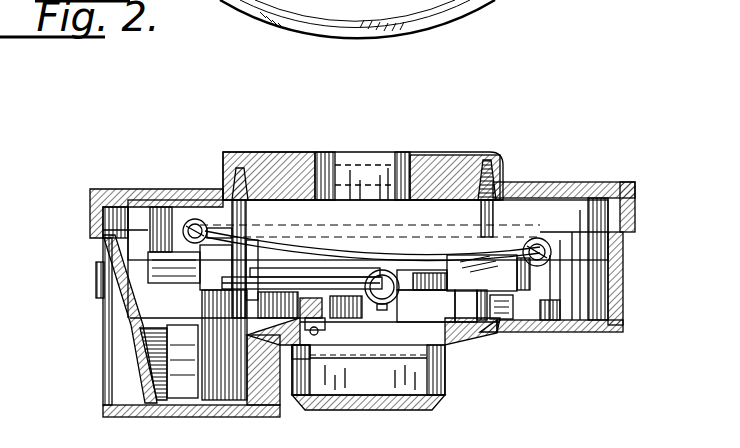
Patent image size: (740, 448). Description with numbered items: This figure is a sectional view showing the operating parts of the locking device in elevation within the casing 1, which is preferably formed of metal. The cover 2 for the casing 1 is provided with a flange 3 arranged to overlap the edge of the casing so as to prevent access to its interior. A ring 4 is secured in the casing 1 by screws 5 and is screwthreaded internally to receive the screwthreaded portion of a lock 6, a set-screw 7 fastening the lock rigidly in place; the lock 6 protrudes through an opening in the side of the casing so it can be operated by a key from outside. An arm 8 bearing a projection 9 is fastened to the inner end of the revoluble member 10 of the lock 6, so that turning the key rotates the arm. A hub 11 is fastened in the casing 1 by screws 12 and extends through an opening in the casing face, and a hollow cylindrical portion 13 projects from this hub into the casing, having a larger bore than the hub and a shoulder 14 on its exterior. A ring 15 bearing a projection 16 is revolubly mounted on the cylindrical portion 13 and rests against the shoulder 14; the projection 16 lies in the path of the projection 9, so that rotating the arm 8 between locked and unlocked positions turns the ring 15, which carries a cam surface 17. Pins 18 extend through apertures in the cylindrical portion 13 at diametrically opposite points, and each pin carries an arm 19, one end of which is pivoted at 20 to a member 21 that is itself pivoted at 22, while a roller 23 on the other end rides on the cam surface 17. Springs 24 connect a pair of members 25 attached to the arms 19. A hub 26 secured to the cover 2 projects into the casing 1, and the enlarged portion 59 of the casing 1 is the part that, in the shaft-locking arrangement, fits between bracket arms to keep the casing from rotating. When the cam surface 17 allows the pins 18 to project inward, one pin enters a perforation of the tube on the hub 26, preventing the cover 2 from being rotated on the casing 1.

The casing 1 is at (585, 331).
The cover 2 is at (557, 183).
The flange 3 is at (636, 218).
The ring 4 is at (182, 361).
The screws 5 is at (192, 286).
The lock 6 is at (132, 283).
The set-screw 7 is at (170, 250).
The arm 8 is at (205, 236).
The projection 9 is at (262, 238).
The revoluble member 10 is at (100, 282).
The hub 11 is at (368, 377).
The screws 12 is at (320, 331).
The hollow cylindrical portion 13 is at (426, 297).
The shoulder 14 is at (495, 232).
The ring 15 is at (368, 230).
The projection 16 is at (258, 276).
The cam surface 17 is at (488, 273).
The pins 18 is at (406, 290).
The arm 19 is at (313, 287).
The pivot 20 is at (137, 333).
The member 21 is at (248, 2).
The pivot 22 is at (303, 355).
The roller 23 is at (468, 306).
The springs 24 is at (190, 222).
The members 25 is at (255, 200).
The hub 26 is at (447, 152).
The enlarged portion 59 is at (258, 408).